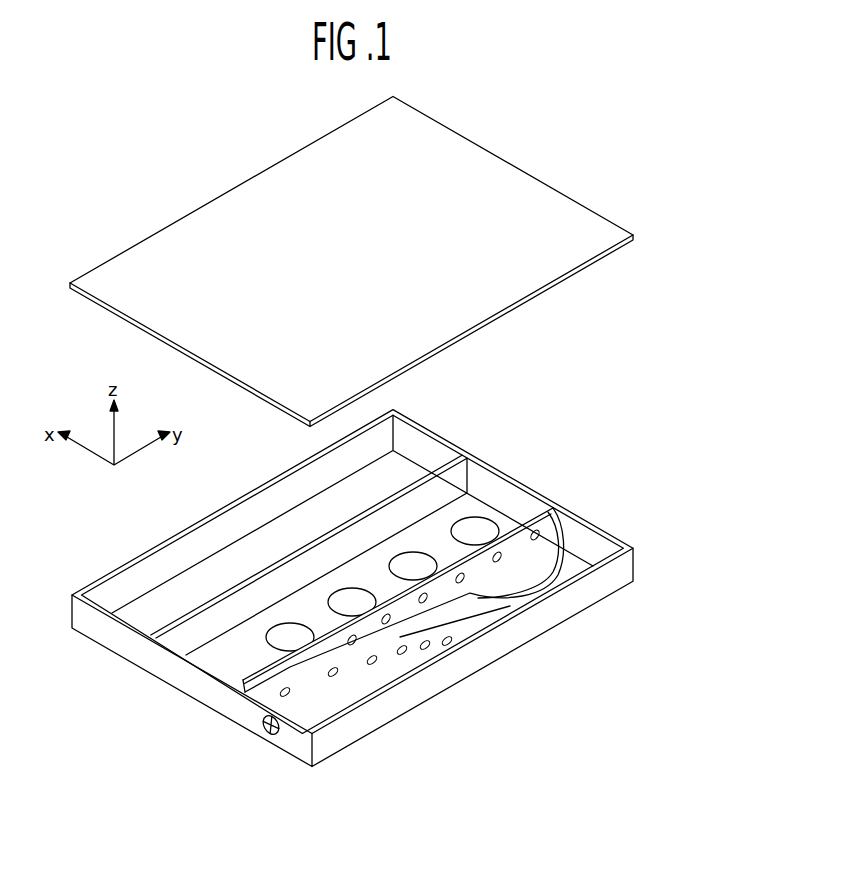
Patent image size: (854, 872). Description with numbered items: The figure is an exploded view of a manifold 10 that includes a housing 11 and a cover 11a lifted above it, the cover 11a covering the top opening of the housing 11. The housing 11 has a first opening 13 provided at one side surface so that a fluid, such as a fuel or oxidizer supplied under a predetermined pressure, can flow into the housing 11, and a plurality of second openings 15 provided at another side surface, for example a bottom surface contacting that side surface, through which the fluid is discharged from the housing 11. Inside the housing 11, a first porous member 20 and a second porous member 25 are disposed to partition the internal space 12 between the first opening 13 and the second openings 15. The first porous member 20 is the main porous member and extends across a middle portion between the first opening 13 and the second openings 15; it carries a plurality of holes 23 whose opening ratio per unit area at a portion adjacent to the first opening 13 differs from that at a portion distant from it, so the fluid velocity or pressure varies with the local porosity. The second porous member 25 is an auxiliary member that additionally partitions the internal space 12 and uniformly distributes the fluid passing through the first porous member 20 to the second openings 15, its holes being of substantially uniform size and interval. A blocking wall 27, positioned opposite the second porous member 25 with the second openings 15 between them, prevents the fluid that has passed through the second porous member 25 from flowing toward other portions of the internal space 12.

The manifold 10 is at (692, 215).
The housing 11 is at (425, 424).
The cover 11a is at (575, 222).
The internal space 12 is at (485, 509).
The first opening 13 is at (266, 735).
The second openings 15 is at (190, 660).
The first porous member 20 is at (465, 625).
The holes 23 is at (405, 652).
The second porous member 25 is at (548, 523).
The blocking wall 27 is at (450, 480).